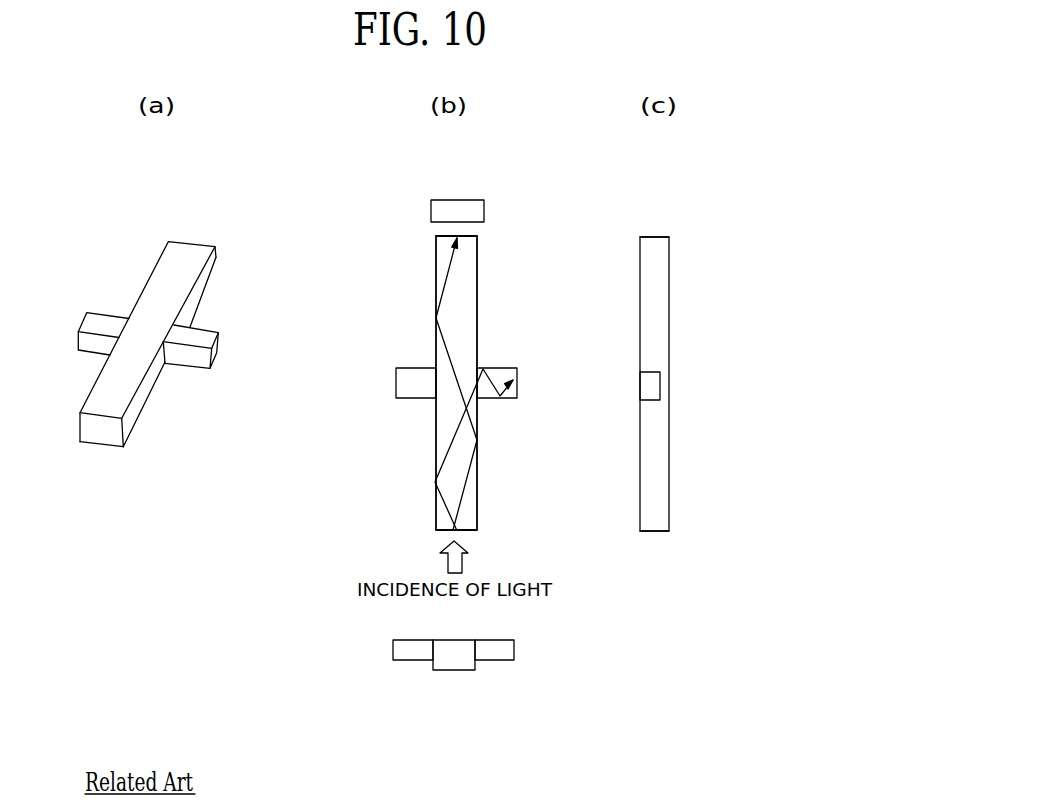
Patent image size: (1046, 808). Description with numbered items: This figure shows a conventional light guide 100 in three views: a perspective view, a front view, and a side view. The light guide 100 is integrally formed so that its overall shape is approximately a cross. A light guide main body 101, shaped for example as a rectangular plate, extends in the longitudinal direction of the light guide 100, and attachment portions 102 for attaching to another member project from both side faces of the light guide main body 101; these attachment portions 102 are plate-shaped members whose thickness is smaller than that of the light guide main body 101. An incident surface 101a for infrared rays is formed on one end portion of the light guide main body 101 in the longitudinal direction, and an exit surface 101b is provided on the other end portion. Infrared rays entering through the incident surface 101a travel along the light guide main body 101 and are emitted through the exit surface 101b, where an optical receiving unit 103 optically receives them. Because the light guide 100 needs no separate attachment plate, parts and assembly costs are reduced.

The light guide 100 is at (383, 452).
The light guide main body 101 is at (143, 291).
The incident surface 101a is at (477, 531).
The exit surface 101b is at (478, 236).
The attachment portions 102 is at (90, 353).
The optical receiving unit 103 is at (468, 212).